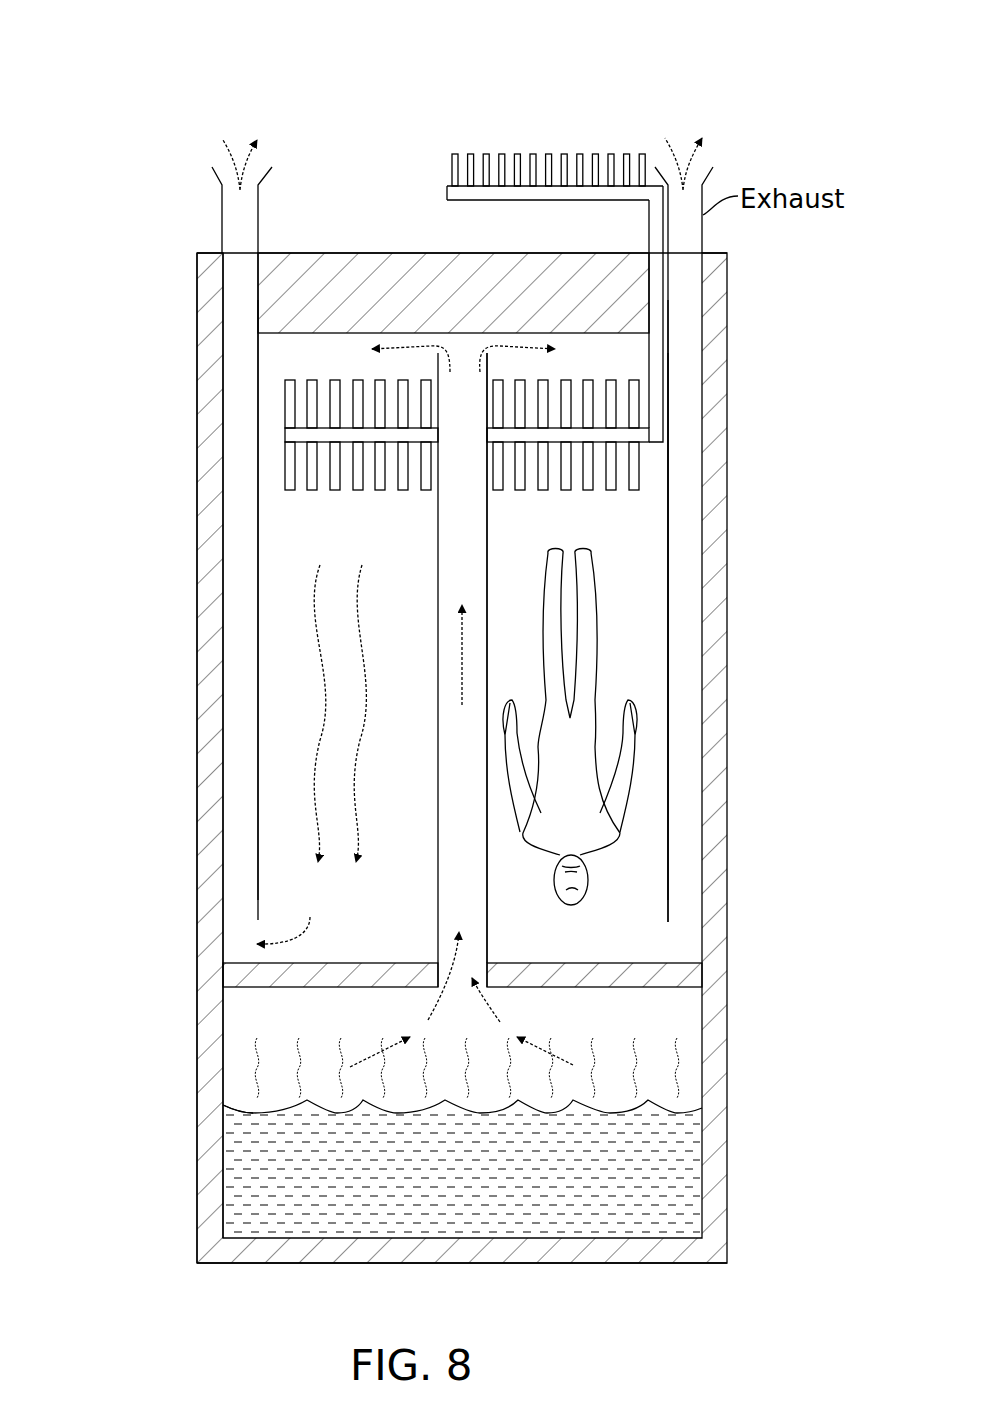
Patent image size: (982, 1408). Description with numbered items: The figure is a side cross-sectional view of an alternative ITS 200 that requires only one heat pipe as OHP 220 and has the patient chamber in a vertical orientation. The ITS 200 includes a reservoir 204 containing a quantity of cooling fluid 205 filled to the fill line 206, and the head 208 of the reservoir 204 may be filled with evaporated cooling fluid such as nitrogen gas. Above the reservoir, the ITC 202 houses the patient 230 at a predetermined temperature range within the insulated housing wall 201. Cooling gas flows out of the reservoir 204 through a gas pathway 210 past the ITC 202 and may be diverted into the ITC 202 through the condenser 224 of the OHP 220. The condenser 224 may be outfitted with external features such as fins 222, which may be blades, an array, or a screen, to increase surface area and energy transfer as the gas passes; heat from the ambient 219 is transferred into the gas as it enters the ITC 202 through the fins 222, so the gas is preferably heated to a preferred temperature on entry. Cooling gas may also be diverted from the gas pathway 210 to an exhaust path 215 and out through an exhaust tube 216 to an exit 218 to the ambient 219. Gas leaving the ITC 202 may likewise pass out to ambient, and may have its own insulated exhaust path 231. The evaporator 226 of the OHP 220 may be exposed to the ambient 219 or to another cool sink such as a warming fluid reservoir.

The ITS 200 is at (102, 611).
The insulated housing wall 201 is at (197, 438).
The ITC 202 is at (652, 680).
The reservoir 204 is at (682, 1179).
The cooling fluid 205 is at (650, 1100).
The fill line 206 is at (248, 1118).
The head of reservoir 208 is at (248, 1038).
The gas pathway 210 is at (197, 801).
The exhaust path 215 is at (237, 693).
The exhaust tube 216 is at (235, 272).
The exit 218 is at (222, 182).
The ambient 219 is at (250, 22).
The OHP 220 is at (447, 190).
The fins 222 is at (643, 479).
The condenser 224 is at (630, 438).
The evaporator 226 is at (652, 183).
The patient 230 is at (587, 798).
The insulated exhaust path 231 is at (688, 251).